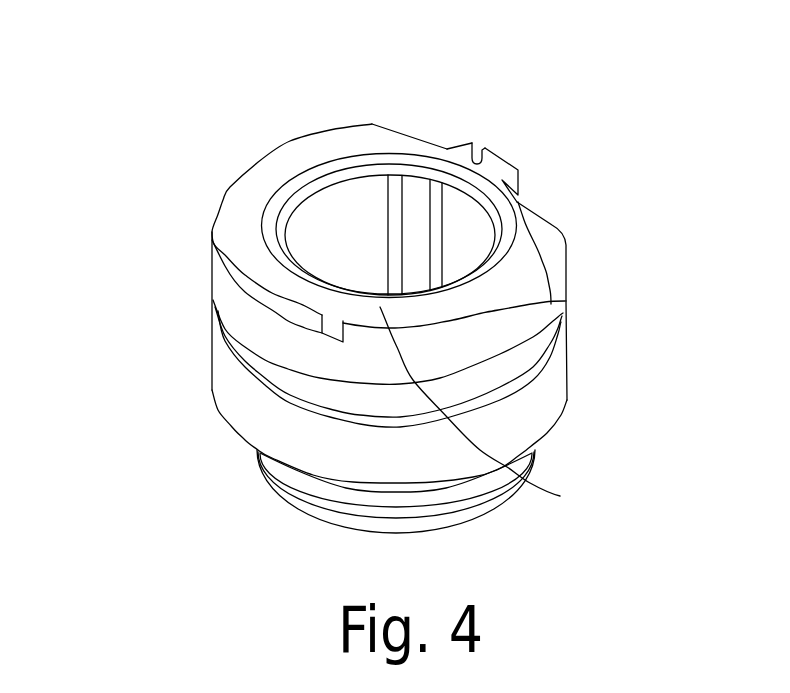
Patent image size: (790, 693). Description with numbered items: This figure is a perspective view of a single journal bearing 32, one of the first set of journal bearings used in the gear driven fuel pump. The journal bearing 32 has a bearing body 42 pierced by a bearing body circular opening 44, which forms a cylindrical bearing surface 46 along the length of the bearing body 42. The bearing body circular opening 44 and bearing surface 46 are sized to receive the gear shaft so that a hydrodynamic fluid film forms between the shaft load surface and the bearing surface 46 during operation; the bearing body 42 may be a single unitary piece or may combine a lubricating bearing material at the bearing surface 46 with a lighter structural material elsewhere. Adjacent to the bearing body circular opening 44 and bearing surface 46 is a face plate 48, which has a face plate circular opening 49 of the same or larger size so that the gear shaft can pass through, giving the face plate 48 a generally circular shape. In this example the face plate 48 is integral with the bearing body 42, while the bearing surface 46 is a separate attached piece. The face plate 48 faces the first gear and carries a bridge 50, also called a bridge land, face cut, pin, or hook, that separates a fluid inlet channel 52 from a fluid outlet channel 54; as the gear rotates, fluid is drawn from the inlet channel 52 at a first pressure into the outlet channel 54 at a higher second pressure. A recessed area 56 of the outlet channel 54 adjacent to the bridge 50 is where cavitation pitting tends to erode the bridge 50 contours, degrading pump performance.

The journal bearing 32 is at (376, 272).
The bearing body 42 is at (570, 355).
The bearing body circular opening 44 is at (416, 205).
The bearing surface 46 is at (328, 208).
The face plate 48 is at (282, 156).
The face plate circular opening 49 is at (560, 496).
The bridge 50 is at (500, 167).
The fluid inlet channel 52 is at (552, 240).
The fluid outlet channel 54 is at (320, 314).
The recessed area 56 is at (478, 145).